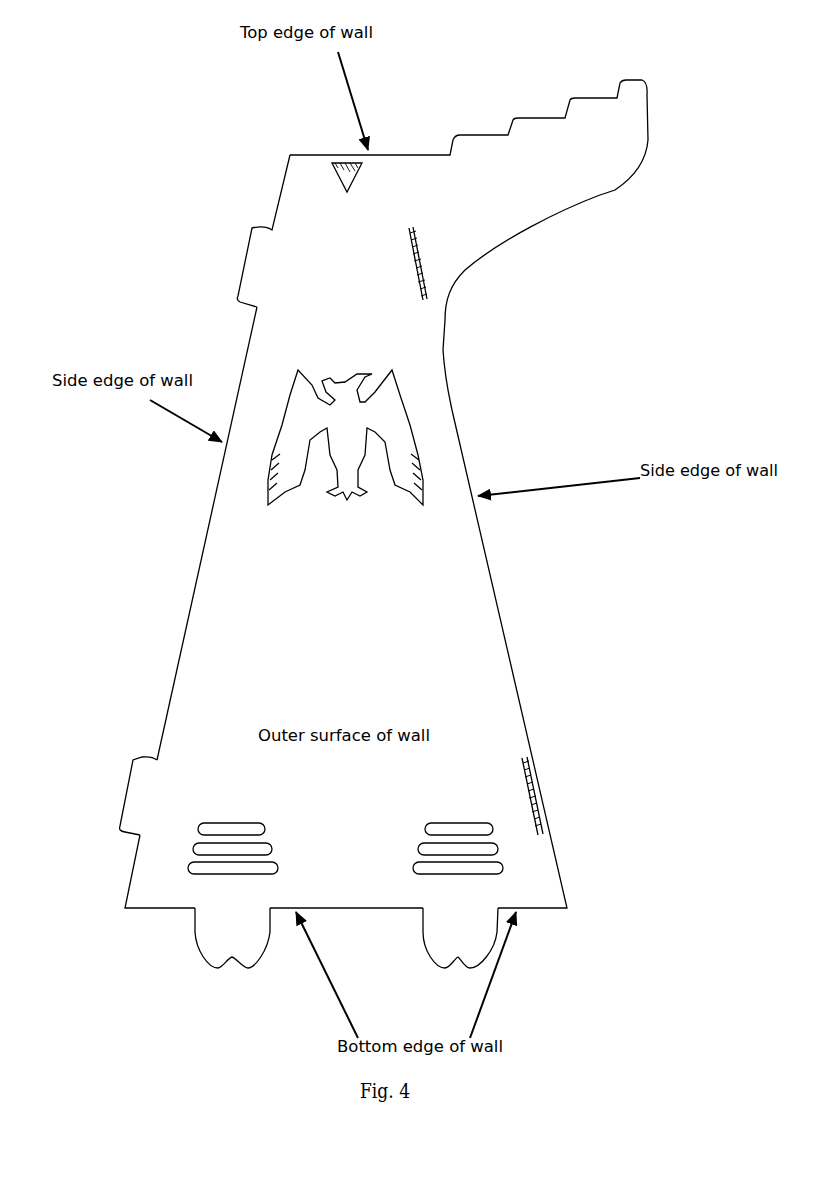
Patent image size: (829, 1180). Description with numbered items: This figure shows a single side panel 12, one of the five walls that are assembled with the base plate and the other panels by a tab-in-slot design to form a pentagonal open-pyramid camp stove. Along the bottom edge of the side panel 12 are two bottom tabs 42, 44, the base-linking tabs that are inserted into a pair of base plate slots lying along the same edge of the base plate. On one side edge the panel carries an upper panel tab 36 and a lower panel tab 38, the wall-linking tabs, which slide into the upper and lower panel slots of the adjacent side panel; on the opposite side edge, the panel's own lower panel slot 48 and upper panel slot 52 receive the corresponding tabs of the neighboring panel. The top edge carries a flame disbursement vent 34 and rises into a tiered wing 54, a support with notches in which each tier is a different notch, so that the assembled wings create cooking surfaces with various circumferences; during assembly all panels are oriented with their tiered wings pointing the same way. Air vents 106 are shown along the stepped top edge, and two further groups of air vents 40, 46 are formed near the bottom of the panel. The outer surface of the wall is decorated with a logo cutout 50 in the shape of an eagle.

The side panel 12 is at (142, 162).
The flame disbursement vent 34 is at (338, 172).
The upper panel tab 36 is at (243, 272).
The lower panel tab 38 is at (133, 787).
The air vents 40 is at (205, 832).
The bottom tab 42 is at (230, 933).
The bottom tab 44 is at (460, 925).
The air vents 46 is at (483, 833).
The lower panel slot 48 is at (537, 772).
The logo cutout 50 is at (390, 410).
The upper panel slot 52 is at (418, 278).
The tiered wing 54 is at (580, 155).
The air vents 106 is at (605, 87).